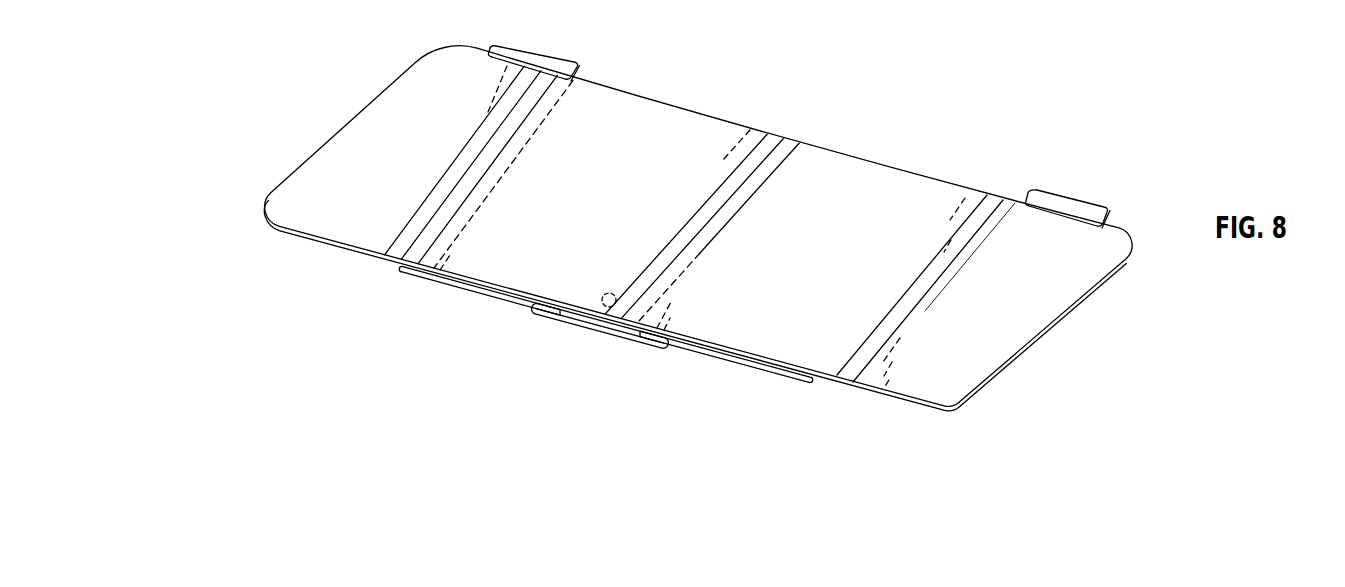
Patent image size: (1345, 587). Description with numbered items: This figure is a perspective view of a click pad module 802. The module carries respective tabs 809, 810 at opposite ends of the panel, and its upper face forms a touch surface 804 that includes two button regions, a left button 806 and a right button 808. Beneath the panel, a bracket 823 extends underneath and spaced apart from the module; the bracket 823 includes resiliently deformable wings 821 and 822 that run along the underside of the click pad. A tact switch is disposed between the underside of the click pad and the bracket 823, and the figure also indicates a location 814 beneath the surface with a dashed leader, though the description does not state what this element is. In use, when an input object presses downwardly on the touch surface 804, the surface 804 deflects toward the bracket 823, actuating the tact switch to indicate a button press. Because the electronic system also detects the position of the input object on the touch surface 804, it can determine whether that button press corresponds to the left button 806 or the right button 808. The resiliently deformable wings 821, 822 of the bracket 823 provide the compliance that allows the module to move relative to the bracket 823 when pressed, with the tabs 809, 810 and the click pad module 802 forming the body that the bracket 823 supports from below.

The click pad module 802 is at (313, 43).
The touch surface 804 is at (622, 174).
The button region 806 is at (375, 217).
The button region 808 is at (828, 341).
The tab 809 is at (546, 55).
The tab 810 is at (1081, 202).
The opening 814 is at (603, 287).
The resiliently deformable wing 821 is at (452, 287).
The resiliently deformable wing 822 is at (725, 360).
The bracket 823 is at (590, 329).